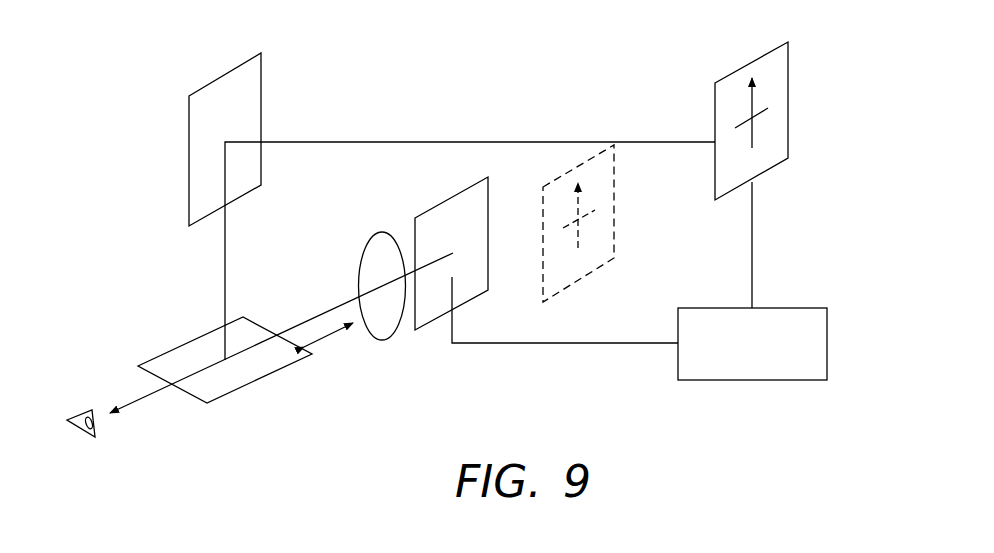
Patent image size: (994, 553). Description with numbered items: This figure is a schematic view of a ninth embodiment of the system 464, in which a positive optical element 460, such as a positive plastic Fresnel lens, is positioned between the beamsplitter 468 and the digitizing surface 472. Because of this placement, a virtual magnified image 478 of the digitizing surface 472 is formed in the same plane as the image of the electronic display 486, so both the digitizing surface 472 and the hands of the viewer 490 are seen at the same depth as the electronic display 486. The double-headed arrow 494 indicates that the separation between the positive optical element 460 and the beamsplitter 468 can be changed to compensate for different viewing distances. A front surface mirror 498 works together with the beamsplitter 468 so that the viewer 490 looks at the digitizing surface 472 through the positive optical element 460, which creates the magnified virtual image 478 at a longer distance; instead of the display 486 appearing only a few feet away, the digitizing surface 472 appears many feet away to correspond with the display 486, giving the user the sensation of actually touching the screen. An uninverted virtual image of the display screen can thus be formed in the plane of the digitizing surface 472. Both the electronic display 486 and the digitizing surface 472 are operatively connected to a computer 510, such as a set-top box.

The system 464 is at (512, 78).
The front surface mirror 498 is at (261, 163).
The digitizing surface 472 is at (455, 196).
The virtual magnified image 478 is at (614, 233).
The electronic display 486 is at (770, 170).
The positive optical element 460 is at (385, 340).
The double-headed arrow 494 is at (327, 335).
The beamsplitter 468 is at (232, 394).
The viewer 490 is at (82, 432).
The computer 510 is at (752, 380).